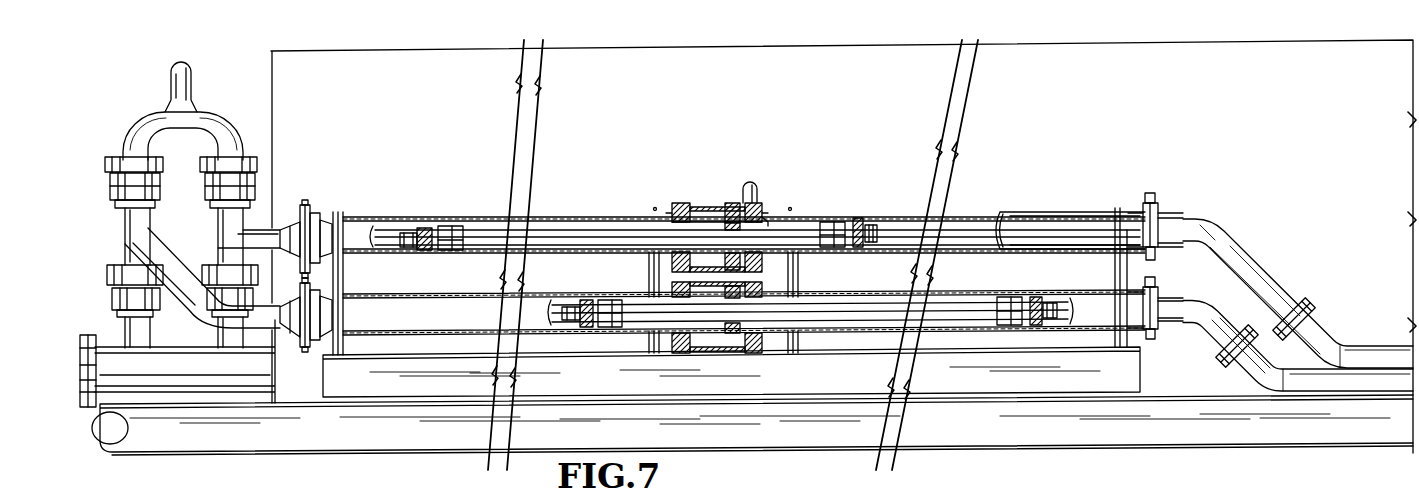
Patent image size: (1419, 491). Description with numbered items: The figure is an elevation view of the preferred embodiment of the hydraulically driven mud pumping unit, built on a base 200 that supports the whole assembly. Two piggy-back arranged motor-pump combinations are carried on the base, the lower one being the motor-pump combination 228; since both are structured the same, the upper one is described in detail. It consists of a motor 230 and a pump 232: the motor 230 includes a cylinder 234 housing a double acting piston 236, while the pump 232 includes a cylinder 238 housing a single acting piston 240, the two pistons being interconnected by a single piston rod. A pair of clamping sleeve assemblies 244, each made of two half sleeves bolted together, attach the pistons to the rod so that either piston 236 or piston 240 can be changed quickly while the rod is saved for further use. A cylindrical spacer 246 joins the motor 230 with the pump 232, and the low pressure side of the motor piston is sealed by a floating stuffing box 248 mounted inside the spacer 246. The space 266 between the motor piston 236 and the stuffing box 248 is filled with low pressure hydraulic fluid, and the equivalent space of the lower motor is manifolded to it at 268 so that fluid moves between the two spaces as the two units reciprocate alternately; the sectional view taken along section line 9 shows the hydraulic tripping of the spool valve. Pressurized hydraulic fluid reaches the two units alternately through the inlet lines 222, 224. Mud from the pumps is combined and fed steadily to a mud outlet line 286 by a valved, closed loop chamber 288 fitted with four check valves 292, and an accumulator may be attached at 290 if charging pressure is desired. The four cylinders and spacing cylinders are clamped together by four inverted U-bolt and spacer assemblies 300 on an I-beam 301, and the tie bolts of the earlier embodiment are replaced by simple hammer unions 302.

The section line 9- 9 is at (768, 82).
The base 200 is at (952, 434).
The inlet line 222 is at (1218, 250).
The inlet line 224 is at (1212, 340).
The motor-pump combination 228 is at (858, 340).
The motor 230 is at (1001, 206).
The pump 232 is at (485, 208).
The cylinder 234 is at (1067, 218).
The double acting piston 236 is at (857, 245).
The cylinder 238 is at (567, 209).
The single acting piston 240 is at (422, 243).
The clamping sleeve assembly 244 is at (450, 250).
The cylindrical spacer 246 is at (700, 200).
The floating stuffing box 248 is at (733, 207).
The space 266 is at (772, 228).
The manifold connection 268 is at (752, 183).
The mud outlet line 286 is at (192, 72).
The valved closed loop chamber 288 is at (114, 237).
The accumulator attachment point 290 is at (82, 339).
The check valve 292 is at (152, 181).
The inverted U-bolt and spacer assembly 300 is at (342, 337).
The I-beam 301 is at (571, 383).
The hammer union 302 is at (215, 162).